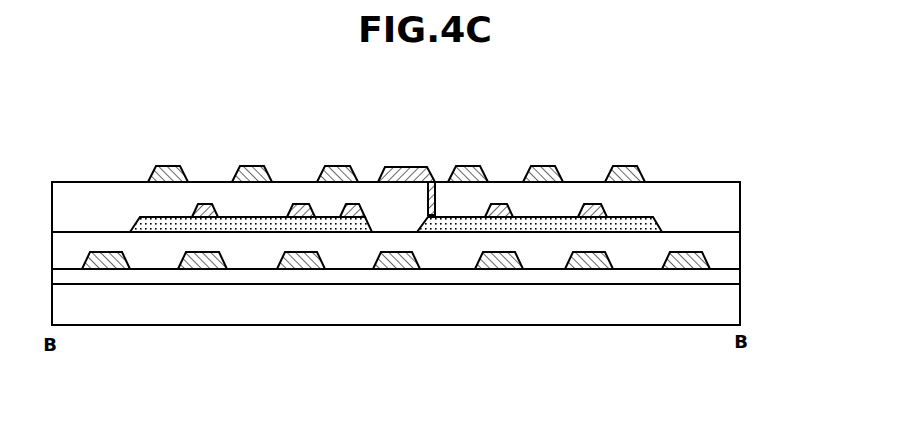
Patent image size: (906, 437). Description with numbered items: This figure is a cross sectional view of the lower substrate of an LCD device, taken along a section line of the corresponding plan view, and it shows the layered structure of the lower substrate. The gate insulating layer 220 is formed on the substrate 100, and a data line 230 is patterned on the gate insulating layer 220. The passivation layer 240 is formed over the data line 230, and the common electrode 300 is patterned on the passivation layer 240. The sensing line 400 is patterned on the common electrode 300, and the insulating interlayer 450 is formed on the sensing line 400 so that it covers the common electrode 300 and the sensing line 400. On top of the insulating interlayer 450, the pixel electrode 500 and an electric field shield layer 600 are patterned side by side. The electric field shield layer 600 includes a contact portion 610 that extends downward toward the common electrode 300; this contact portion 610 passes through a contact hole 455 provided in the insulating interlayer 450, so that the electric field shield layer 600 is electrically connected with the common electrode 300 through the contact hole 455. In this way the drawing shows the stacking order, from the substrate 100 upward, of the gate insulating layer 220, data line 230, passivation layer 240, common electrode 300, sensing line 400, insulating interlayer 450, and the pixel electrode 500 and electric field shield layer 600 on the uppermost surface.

The substrate 100 is at (740, 303).
The gate insulating layer 220 is at (740, 278).
The data line 230 is at (590, 262).
The passivation layer 240 is at (740, 252).
The common electrode 300 is at (285, 225).
The sensing line 400 is at (200, 206).
The insulating interlayer 450 is at (740, 208).
The contact hole 455 is at (447, 187).
The pixel electrode 500 is at (623, 182).
The electric field shield layer 600 is at (380, 168).
The contact portion 610 is at (432, 185).